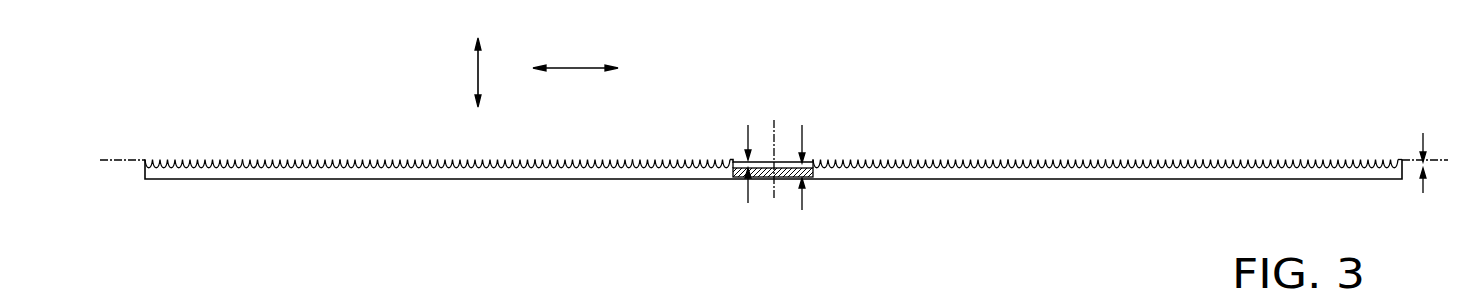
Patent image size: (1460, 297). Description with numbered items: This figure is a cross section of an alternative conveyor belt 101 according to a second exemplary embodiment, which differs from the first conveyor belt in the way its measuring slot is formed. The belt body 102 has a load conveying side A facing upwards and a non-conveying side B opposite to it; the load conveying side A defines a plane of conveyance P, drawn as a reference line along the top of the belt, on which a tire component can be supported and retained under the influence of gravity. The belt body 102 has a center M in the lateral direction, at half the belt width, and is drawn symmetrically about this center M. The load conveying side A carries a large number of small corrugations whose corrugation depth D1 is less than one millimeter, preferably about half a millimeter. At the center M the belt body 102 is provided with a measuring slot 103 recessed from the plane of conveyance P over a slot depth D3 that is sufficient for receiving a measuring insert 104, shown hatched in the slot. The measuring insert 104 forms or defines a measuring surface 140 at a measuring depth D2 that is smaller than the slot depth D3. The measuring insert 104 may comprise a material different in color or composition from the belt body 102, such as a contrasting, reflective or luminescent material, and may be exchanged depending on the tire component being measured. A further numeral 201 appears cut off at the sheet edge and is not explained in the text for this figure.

The conveyor belt 101 is at (243, 100).
The belt body 102 is at (291, 172).
The measuring slot 103 is at (758, 163).
The measuring insert 104 is at (760, 180).
The measuring surface 140 is at (786, 163).
The component 201 is at (207, 291).
The load conveying side A is at (1020, 160).
The non-conveying side B is at (531, 180).
The plane of conveyance P is at (763, 157).
The center M is at (778, 171).
The corrugation depth D1 is at (1438, 152).
The measuring depth D2 is at (731, 162).
The slot depth D3 is at (820, 173).